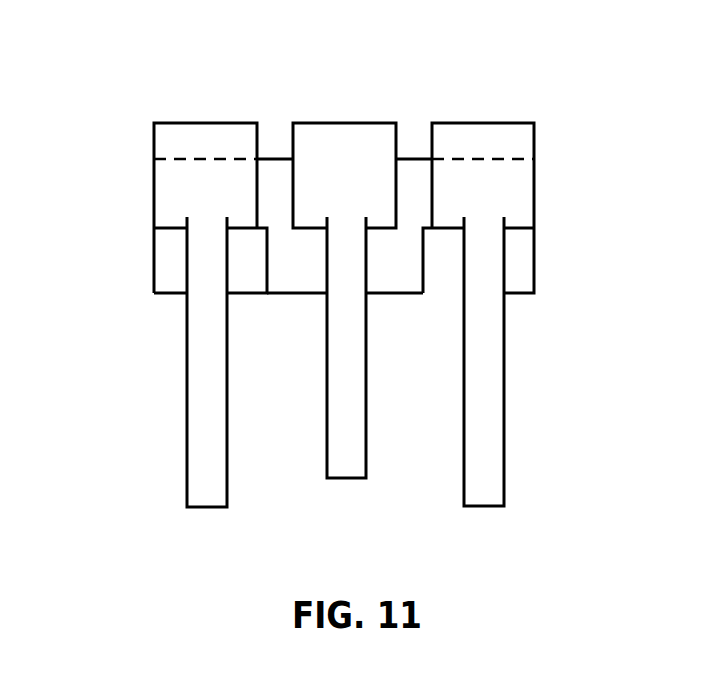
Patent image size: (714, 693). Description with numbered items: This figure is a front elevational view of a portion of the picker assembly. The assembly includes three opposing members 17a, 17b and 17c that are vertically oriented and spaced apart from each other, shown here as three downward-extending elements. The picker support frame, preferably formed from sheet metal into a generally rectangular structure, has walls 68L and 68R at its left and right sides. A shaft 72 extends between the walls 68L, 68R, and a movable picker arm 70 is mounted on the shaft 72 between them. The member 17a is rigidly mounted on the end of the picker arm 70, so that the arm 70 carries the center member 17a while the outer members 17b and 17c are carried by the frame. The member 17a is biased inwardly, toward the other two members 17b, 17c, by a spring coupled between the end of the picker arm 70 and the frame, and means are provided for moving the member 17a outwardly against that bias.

The wall 68L is at (154, 158).
The wall 68R is at (534, 158).
The movable picker arm 70 is at (346, 122).
The shaft 72 is at (493, 157).
The opposing member 17a is at (355, 480).
The opposing member 17b is at (187, 421).
The opposing member 17c is at (505, 453).